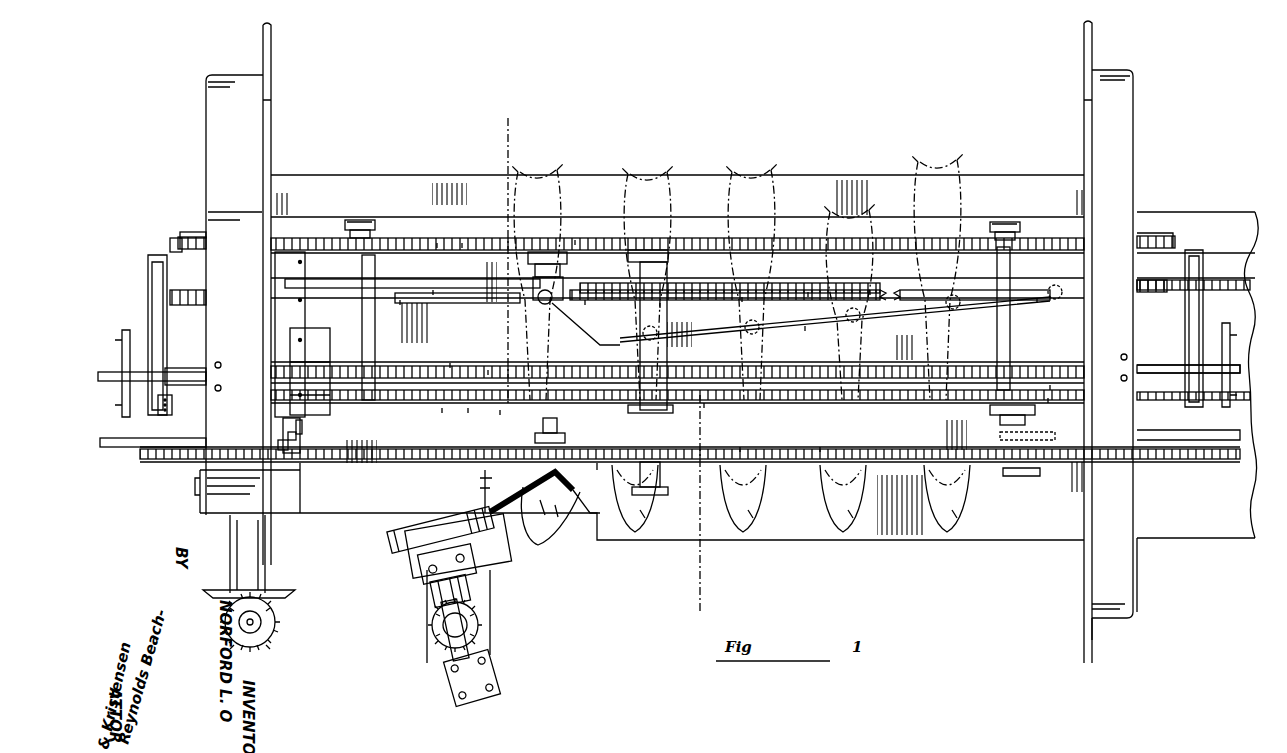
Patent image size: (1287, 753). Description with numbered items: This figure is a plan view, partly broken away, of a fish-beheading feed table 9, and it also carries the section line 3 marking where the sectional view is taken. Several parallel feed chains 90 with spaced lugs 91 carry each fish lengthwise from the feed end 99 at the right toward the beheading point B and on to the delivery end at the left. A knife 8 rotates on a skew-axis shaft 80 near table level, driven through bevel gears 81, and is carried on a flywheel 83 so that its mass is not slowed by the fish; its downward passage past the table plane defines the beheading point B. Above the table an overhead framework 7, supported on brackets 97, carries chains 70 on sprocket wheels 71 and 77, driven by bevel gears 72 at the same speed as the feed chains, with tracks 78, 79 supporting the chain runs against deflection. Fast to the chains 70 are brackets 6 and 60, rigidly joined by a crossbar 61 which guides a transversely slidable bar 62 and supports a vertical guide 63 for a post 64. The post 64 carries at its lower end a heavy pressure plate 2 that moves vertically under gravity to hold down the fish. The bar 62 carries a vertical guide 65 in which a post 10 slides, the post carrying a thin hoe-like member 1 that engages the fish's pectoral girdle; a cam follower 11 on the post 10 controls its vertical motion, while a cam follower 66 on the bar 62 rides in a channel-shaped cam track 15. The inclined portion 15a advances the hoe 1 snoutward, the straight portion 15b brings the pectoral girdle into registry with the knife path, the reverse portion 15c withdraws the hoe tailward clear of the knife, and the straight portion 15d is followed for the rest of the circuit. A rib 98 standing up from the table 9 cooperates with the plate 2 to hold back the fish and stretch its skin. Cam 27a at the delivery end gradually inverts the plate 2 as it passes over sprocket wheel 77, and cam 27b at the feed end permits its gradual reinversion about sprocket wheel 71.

The hoe-like fish-engaging member 1 is at (108, 452).
The pressure plate 2 is at (122, 330).
The section line 3 is at (490, 128).
The bracket 6 is at (172, 405).
The overhead framework 7 is at (346, 226).
The knife 8 is at (500, 498).
The feed table 9 is at (812, 540).
The post 10 is at (142, 450).
The cam follower 11 is at (283, 452).
The cam track 15 is at (433, 290).
The inclined portion of cam track 15a is at (807, 328).
The straight portion of cam track 15b is at (660, 306).
The reverse portion of cam track 15c is at (585, 302).
The straight portion of cam track 15d is at (402, 302).
The cam 27a is at (100, 372).
The cam 27b is at (1157, 372).
The bracket 60 is at (175, 250).
The crossbar 61 is at (150, 270).
The transversely slidable bar 62 is at (300, 425).
The vertical guide 63 is at (175, 375).
The post 64 is at (500, 410).
The vertical guide 65 is at (195, 470).
The cam follower 66 is at (182, 305).
The chains 70 is at (580, 240).
The sprocket wheel 71 is at (1147, 233).
The bevel gears 72 is at (278, 612).
The sprocket wheel 77 is at (181, 237).
The track 78 is at (437, 243).
The track 79 is at (462, 243).
The shaft 80 is at (445, 660).
The bevel gear 81 is at (440, 616).
The flywheel 83 is at (388, 548).
The feed chains 90 is at (450, 363).
The lugs 91 is at (488, 370).
The brackets 97 is at (253, 104).
The rib 98 is at (742, 297).
The feed end 99 is at (1210, 215).
The beheading point B is at (545, 576).